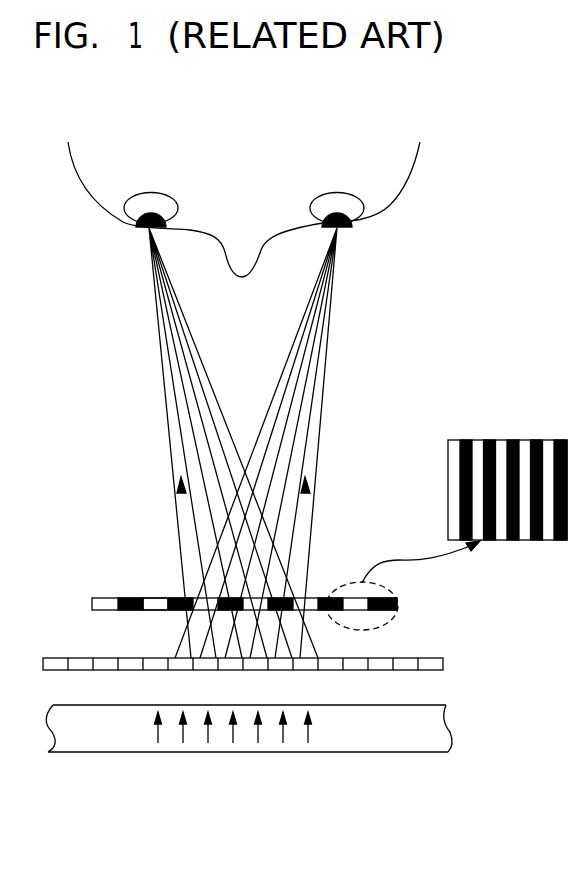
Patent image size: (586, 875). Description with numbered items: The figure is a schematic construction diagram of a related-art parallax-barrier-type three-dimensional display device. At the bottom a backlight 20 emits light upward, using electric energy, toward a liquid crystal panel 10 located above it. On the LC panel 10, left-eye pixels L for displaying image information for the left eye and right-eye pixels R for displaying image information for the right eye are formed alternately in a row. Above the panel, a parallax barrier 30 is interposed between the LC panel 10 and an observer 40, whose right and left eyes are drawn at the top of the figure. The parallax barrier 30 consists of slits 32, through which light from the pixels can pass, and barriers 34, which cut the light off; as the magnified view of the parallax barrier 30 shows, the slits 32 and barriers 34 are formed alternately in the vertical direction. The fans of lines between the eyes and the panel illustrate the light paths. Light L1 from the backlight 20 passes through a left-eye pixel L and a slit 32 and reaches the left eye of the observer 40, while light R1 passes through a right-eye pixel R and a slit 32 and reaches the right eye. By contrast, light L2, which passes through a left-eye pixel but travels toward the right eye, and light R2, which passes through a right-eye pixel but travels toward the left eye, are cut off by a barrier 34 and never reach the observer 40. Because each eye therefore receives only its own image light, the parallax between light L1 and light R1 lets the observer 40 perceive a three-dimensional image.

The observer 40 is at (443, 172).
The parallax barrier 30 is at (399, 605).
The barrier 34 is at (126, 597).
The slit 32 is at (157, 597).
The liquid crystal panel 10 is at (445, 662).
The backlight 20 is at (450, 726).
The light R1 is at (181, 510).
The light L1 is at (307, 510).
The light L2 is at (228, 617).
The light R2 is at (268, 617).